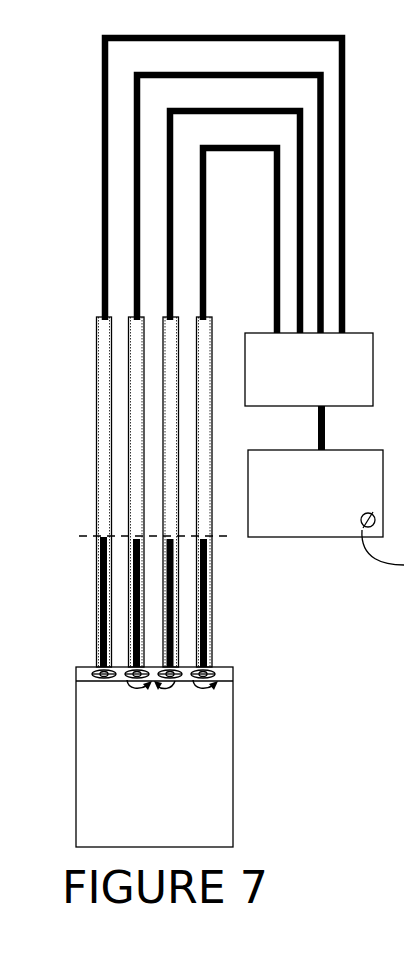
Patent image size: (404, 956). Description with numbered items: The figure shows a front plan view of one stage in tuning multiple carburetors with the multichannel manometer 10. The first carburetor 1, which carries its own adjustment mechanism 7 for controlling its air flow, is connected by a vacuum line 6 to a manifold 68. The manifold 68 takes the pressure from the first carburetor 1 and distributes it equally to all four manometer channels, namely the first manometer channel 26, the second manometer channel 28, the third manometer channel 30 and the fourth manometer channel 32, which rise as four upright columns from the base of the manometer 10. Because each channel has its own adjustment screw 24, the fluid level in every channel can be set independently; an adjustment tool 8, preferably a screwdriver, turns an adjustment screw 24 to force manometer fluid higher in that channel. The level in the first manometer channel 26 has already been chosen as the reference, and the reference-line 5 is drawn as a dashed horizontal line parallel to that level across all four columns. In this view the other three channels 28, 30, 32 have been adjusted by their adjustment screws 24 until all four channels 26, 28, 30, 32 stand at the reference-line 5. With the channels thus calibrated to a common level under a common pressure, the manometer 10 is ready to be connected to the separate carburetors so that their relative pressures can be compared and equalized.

The carburetor # 1 is at (280, 537).
The reference-line 5 is at (215, 535).
The vacuum line 6 is at (207, 183).
The adjustment mechanism 7 is at (0, 568).
The adjustment tool 8 is at (3, 268).
The multichannel manometer 10 is at (52, 617).
The adjustment screw 24 is at (103, 682).
The manometer channel #1 26 is at (100, 363).
The manometer channel #2 28 is at (132, 462).
The manometer channel #3 30 is at (180, 347).
The manometer channel #4 32 is at (212, 388).
The manifold 68 is at (373, 333).